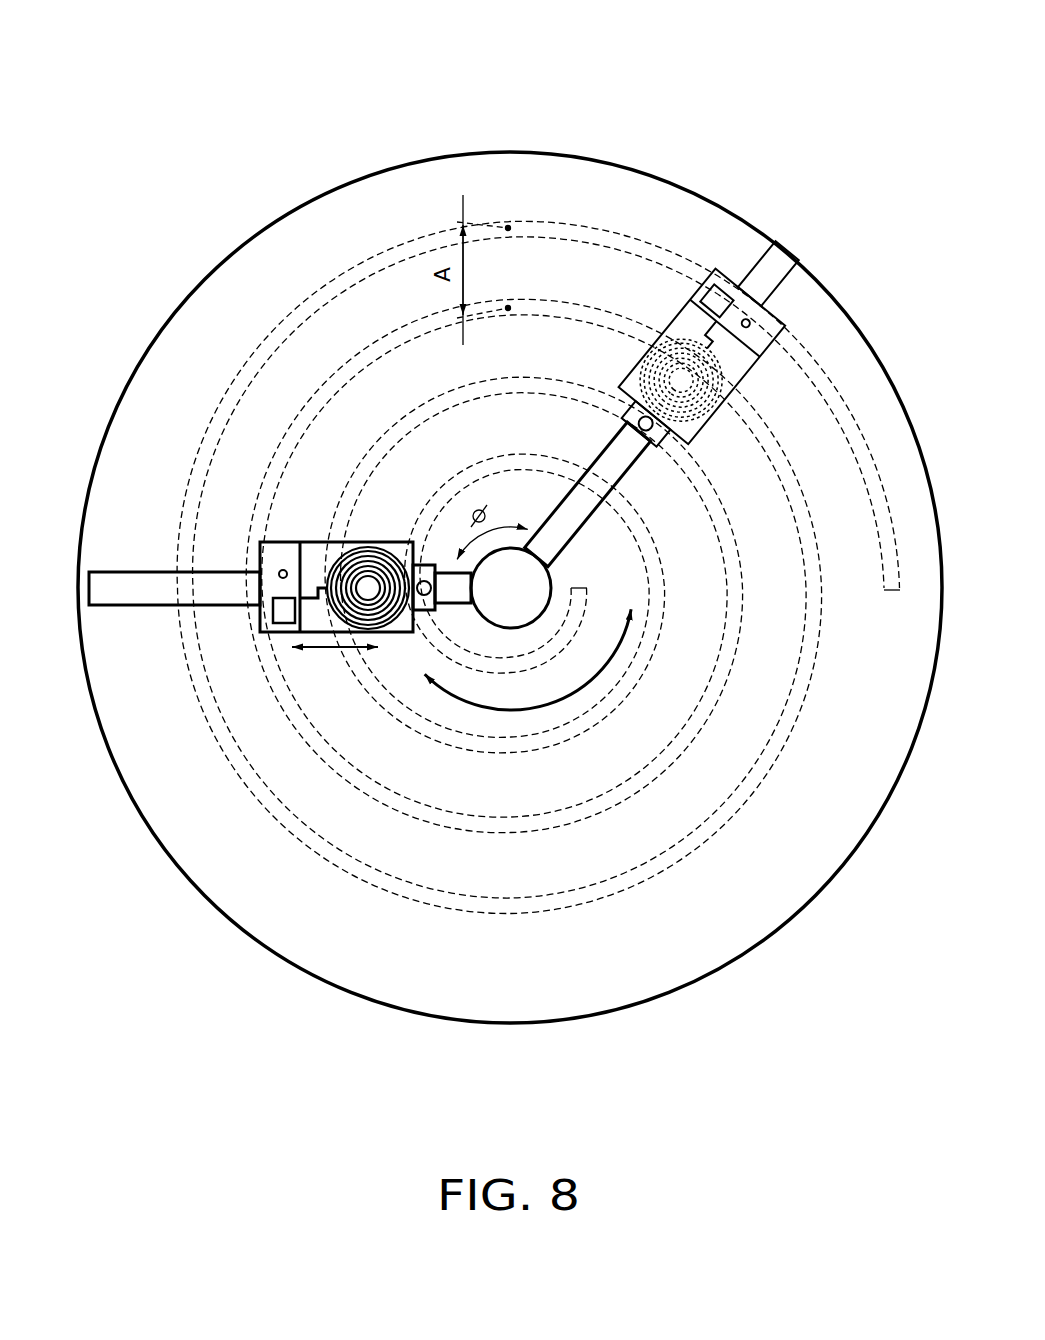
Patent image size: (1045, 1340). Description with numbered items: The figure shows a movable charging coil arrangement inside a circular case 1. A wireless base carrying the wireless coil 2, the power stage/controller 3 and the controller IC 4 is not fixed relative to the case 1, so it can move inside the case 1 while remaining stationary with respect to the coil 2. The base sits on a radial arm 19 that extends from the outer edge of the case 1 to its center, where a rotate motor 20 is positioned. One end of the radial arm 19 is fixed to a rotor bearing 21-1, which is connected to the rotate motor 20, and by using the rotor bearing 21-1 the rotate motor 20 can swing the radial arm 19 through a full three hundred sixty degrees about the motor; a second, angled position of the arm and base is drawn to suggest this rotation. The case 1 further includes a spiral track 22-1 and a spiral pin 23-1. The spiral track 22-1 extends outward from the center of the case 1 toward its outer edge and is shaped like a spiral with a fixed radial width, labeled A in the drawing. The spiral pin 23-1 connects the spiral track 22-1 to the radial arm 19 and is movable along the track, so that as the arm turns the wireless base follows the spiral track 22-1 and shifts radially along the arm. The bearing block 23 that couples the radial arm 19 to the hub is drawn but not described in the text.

The case 1 is at (694, 188).
The wireless coil 2 is at (366, 634).
The power stage/controller 3 is at (282, 571).
The controller IC 4 is at (283, 628).
The radial arm 19 is at (243, 568).
The rotate motor 20 is at (536, 540).
The rotor bearing 21-1 is at (520, 600).
The spiral track 22-1 is at (221, 401).
The bearing block 23 is at (418, 562).
The spiral pin 23-1 is at (330, 541).